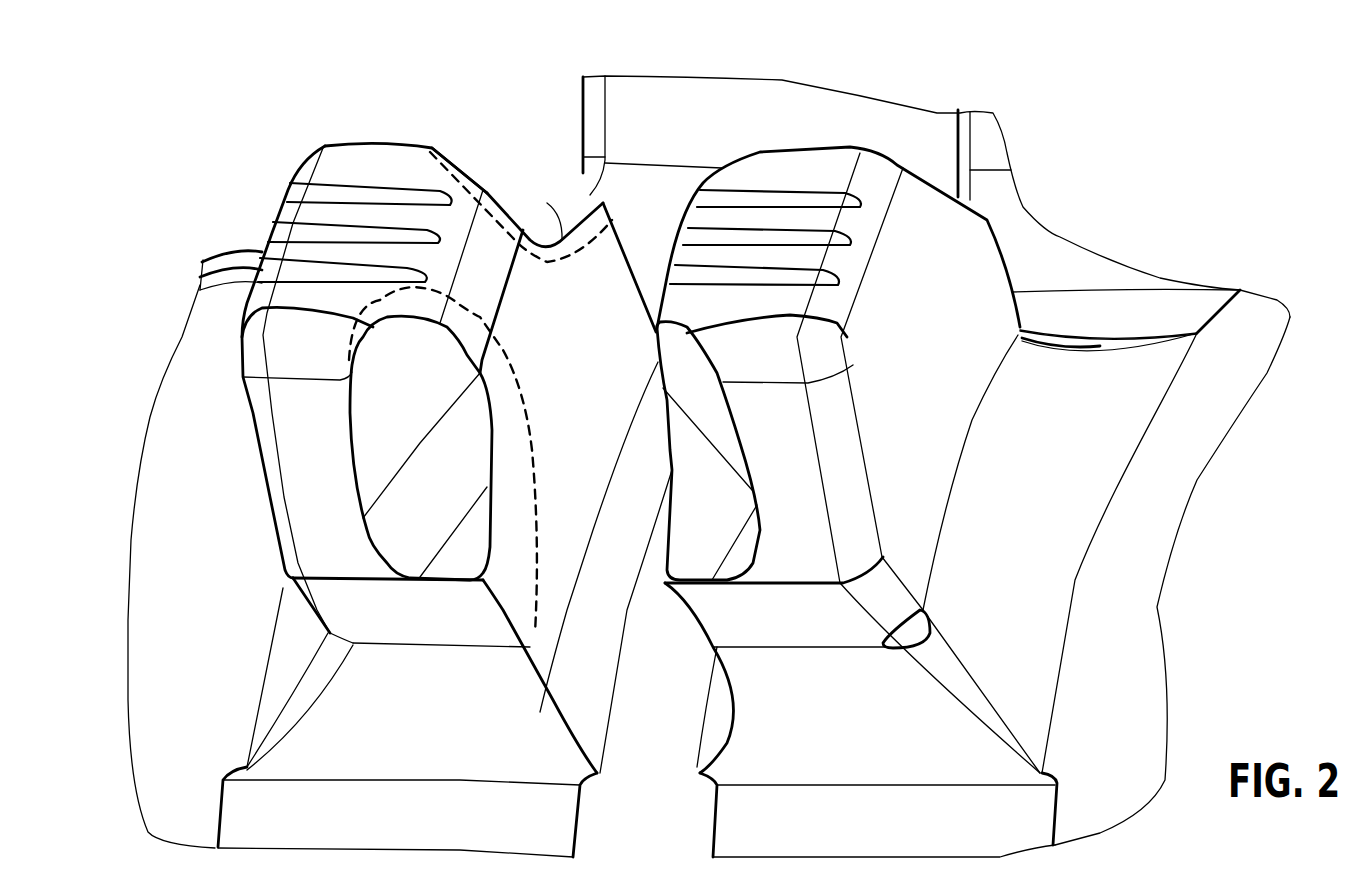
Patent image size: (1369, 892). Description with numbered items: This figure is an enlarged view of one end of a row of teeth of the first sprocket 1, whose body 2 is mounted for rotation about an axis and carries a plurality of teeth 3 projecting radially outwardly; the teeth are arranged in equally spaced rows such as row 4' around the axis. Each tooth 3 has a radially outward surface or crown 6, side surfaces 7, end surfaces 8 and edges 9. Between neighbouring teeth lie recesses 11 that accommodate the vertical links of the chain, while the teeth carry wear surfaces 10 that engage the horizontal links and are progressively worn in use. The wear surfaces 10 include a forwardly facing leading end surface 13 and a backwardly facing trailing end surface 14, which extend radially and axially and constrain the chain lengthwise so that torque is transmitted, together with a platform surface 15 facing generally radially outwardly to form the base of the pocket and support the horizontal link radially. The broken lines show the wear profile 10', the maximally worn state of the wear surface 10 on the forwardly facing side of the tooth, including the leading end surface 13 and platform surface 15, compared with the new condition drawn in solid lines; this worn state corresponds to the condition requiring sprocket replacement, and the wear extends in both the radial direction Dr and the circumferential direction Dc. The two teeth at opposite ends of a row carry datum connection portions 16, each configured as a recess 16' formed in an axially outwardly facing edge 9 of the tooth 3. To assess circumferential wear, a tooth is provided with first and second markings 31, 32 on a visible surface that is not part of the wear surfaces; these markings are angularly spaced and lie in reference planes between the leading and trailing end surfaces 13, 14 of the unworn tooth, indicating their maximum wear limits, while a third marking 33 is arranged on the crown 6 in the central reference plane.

The first sprocket 1 is at (1130, 206).
The body 2 is at (1027, 840).
The teeth 3 is at (404, 94).
The row 4' is at (1166, 581).
The crown 6 is at (385, 184).
The side surfaces 7 is at (255, 443).
The end surfaces 8 is at (473, 127).
The edges 9 is at (1000, 258).
The wear surfaces 10 is at (517, 309).
The wear profile 10' is at (482, 392).
The recesses 11 is at (642, 663).
The leading end surfaces 13 is at (432, 368).
The trailing end surfaces 14 is at (487, 193).
The platform surface 15 is at (573, 210).
The datum connection portions 16 is at (720, 449).
The recess 16' is at (1108, 335).
The first marking 31 is at (843, 277).
The second marking 32 is at (870, 200).
The third marking 33 is at (853, 238).
The circumferential direction Dc is at (500, 235).
The radial direction Dr is at (524, 473).